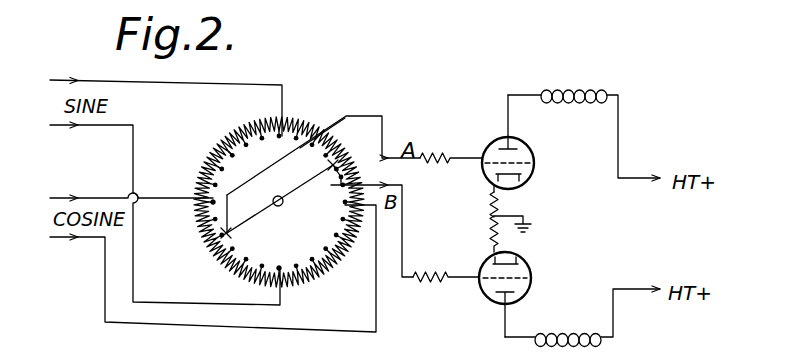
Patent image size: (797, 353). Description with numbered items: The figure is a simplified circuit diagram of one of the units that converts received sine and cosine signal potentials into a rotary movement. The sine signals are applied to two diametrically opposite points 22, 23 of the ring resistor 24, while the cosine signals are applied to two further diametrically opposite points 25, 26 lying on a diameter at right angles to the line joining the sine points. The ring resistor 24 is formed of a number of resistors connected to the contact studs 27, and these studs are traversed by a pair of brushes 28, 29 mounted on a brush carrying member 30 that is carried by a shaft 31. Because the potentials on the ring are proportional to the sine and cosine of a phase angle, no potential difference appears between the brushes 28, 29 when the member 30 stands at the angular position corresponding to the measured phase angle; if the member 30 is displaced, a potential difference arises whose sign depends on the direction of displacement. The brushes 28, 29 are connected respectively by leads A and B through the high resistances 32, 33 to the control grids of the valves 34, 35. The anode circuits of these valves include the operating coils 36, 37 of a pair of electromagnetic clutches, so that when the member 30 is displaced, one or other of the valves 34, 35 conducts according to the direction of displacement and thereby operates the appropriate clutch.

The point 22 is at (292, 124).
The point 23 is at (292, 282).
The ring resistor 24 is at (325, 128).
The point 25 is at (208, 202).
The point 26 is at (346, 188).
The contact studs 27 is at (208, 180).
The brush 28 is at (222, 242).
The brush 29 is at (338, 170).
The brush carrying member 30 is at (302, 188).
The shaft 31 is at (280, 206).
The high resistance 32 is at (443, 153).
The high resistance 33 is at (435, 283).
The valve 34 is at (533, 156).
The valve 35 is at (529, 266).
The operating coil 36 is at (560, 104).
The operating coil 37 is at (563, 333).